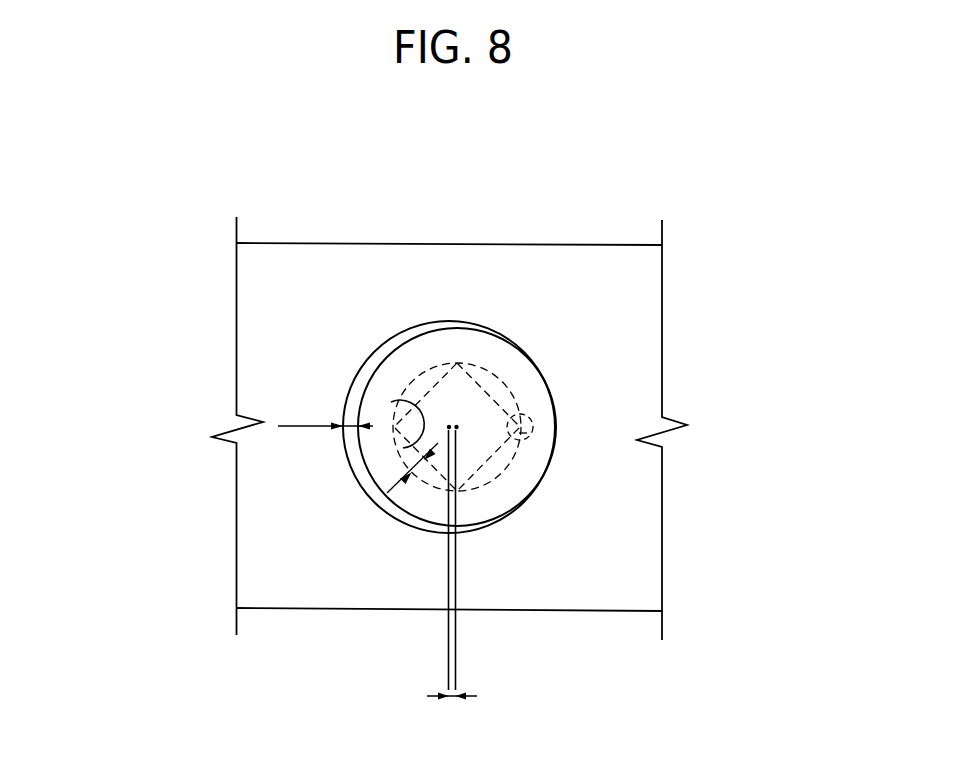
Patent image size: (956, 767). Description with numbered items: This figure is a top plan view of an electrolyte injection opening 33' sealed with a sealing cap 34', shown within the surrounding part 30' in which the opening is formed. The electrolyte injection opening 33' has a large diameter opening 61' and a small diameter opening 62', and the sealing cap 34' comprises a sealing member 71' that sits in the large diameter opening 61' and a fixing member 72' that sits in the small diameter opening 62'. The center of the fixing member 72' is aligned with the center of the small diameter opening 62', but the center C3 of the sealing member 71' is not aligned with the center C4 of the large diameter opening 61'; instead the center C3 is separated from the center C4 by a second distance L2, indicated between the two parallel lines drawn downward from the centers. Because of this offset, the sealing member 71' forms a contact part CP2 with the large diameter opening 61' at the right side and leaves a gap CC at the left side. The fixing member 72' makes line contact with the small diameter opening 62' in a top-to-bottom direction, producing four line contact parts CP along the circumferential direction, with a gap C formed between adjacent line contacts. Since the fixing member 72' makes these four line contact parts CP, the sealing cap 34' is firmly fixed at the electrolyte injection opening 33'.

The substrate plate 30' is at (449, 443).
The electrolyte injection opening 33' is at (318, 427).
The large diameter opening 61' is at (347, 427).
The small diameter opening 62' is at (281, 442).
The sealing cap 34' is at (457, 303).
The sealing member 71' is at (457, 327).
The fixing member 72' is at (457, 327).
The contact part CP is at (522, 431).
The contact part CP2 is at (553, 393).
The center of sealing member C3 is at (456, 666).
The center of large diameter opening C4 is at (448, 666).
The second distance L2 is at (452, 714).
The gap CC is at (325, 411).
The gap C is at (412, 476).